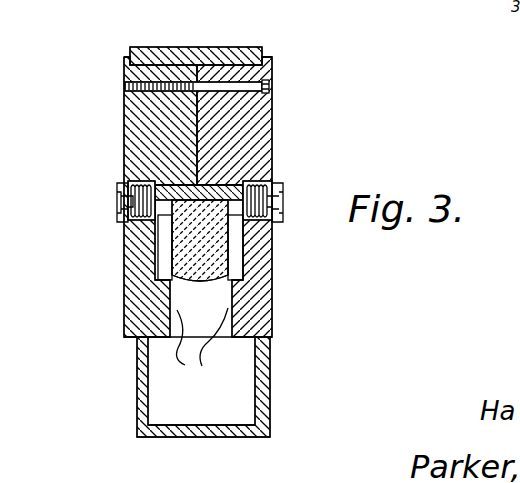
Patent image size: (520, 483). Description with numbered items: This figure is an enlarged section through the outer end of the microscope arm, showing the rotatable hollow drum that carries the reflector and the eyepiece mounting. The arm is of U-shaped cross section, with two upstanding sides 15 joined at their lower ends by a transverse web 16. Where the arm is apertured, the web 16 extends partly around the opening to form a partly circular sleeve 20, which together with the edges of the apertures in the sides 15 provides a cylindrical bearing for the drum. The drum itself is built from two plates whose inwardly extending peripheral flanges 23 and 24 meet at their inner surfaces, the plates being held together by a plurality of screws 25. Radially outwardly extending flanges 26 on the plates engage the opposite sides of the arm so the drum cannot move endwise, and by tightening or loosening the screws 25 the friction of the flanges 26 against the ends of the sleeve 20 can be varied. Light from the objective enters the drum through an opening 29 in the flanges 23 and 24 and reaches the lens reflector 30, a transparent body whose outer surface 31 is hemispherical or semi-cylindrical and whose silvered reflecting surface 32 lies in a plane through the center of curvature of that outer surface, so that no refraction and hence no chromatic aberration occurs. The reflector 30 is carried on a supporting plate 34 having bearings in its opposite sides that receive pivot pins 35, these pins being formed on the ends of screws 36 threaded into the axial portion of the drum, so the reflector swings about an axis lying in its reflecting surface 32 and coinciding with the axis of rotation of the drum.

The sides 15 is at (137, 380).
The transverse web 16 is at (200, 437).
The sleeve 20 is at (175, 47).
The peripheral flange 23 is at (222, 103).
The peripheral flange 24 is at (172, 100).
The screws 25 is at (126, 88).
The radially outwardly extending flanges 26 is at (126, 58).
The opening 29 is at (200, 348).
The lens reflector 30 is at (268, 250).
The outer surface 31 is at (243, 281).
The reflecting surface 32 is at (207, 200).
The supporting plate 34 is at (243, 182).
The pivot pins 35 is at (117, 190).
The screws 36 is at (118, 214).